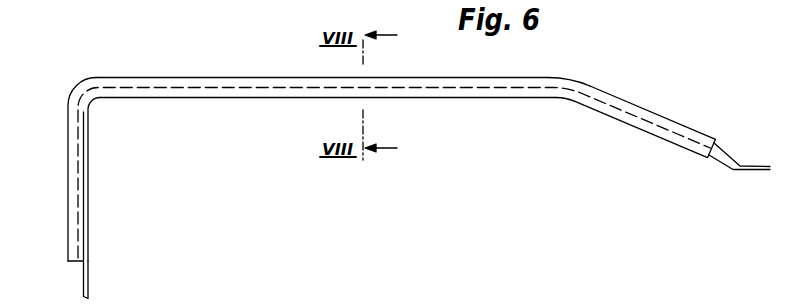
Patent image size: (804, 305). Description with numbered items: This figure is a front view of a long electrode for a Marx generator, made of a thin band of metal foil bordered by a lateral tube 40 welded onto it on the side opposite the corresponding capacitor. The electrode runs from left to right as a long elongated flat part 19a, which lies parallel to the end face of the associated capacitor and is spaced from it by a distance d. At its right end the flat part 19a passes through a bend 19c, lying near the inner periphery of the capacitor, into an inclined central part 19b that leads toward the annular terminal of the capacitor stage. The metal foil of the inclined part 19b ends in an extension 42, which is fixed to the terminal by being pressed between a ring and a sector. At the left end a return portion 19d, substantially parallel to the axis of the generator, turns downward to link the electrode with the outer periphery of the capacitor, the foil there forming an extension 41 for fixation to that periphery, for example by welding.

The elongated flat part 19a is at (252, 99).
The inclined central part 19b is at (640, 131).
The bend 19c is at (573, 79).
The return portion 19d is at (67, 210).
The lateral tube 40 is at (428, 83).
The extension 41 is at (93, 268).
The extension 42 is at (747, 166).